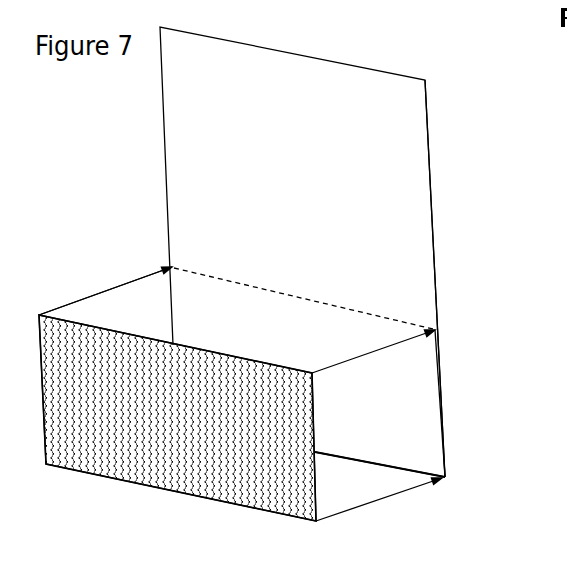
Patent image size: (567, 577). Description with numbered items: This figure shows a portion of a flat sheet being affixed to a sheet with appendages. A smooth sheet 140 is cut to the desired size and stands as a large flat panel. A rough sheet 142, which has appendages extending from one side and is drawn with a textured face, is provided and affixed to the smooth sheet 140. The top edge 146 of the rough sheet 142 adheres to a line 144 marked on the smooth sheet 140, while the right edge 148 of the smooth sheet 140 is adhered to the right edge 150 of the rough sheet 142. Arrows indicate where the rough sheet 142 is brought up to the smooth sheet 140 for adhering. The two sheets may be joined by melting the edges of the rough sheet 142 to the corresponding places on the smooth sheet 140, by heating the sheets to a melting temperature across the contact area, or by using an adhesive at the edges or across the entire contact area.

The smooth sheet 140 is at (303, 208).
The rough sheet 142 is at (183, 424).
The line 144 is at (408, 318).
The top edge 146 is at (116, 331).
The right edge 148 is at (440, 400).
The right edge 150 is at (316, 505).